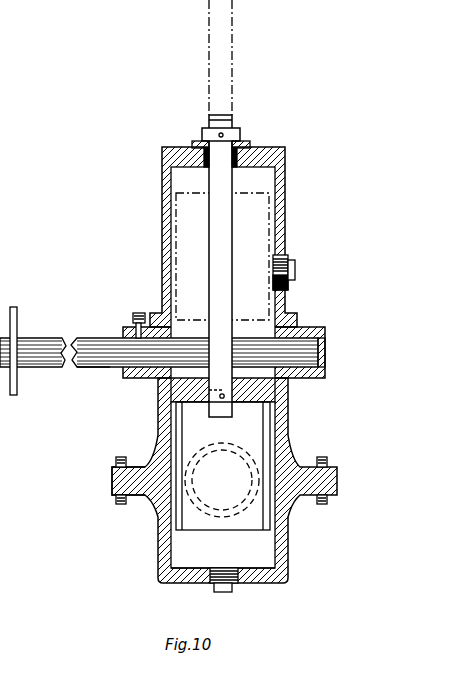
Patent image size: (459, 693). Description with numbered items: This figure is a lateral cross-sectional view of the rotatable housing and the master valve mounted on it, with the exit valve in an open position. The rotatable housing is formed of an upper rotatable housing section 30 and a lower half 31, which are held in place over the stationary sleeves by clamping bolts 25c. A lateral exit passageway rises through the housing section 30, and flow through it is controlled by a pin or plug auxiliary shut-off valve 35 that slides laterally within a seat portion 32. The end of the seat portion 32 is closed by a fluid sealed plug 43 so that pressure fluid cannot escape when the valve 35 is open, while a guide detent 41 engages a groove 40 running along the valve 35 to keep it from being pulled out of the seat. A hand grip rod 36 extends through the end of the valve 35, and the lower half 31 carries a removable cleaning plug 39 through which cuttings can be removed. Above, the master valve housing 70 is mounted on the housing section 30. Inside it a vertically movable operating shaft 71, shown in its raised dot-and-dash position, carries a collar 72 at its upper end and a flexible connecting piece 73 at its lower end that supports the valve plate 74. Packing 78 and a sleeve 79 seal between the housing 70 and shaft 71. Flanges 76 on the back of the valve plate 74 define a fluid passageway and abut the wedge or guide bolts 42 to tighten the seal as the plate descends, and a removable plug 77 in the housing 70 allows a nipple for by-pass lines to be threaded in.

The master valve housing 70 is at (286, 157).
The operating shaft 71 is at (233, 250).
The collar 72 is at (238, 130).
The connecting piece 73 is at (226, 395).
The valve plate 74 is at (270, 216).
The flange 76 is at (181, 530).
The plug 77 is at (296, 264).
The packing 78 is at (205, 158).
The sleeve 79 is at (197, 143).
The rotatable housing section 30 is at (289, 416).
The lower half of rotatable housing 31 is at (291, 559).
The seat portion 32 is at (324, 359).
The auxiliary shut-off valve 35 is at (88, 369).
The hand grip rod 36 is at (18, 378).
The cleaning plug 39 is at (238, 591).
The groove 40 is at (101, 338).
The guide detent 41 is at (139, 313).
The guide bolts 42 is at (178, 513).
The fluid sealed plug 43 is at (327, 350).
The clamping bolts 25c is at (325, 460).